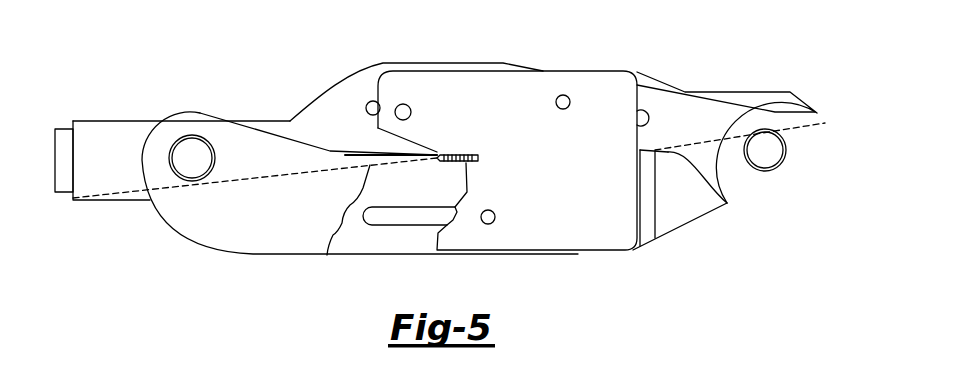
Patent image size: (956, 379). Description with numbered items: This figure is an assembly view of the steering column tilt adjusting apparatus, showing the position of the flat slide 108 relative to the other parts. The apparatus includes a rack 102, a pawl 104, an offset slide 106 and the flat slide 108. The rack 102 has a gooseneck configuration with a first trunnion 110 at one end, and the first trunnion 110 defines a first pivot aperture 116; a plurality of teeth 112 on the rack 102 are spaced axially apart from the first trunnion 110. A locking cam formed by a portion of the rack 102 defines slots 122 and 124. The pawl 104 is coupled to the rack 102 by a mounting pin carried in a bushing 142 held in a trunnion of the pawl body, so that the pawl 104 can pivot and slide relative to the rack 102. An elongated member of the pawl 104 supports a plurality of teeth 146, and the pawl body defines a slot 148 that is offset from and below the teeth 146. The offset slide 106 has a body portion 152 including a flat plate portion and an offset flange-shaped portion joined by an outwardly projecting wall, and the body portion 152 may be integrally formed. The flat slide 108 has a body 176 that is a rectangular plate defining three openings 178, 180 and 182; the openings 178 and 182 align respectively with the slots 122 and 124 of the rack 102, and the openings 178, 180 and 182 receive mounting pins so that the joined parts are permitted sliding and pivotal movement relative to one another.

The rack 102 is at (748, 92).
The pawl 104 is at (200, 238).
The offset slide 106 is at (672, 230).
The flat slide 108 is at (570, 155).
The first trunnion 110 is at (787, 213).
The teeth 112 is at (466, 157).
The first pivot aperture 116 is at (775, 150).
The slot 122 is at (368, 112).
The slot 124 is at (650, 123).
The bushing 142 is at (188, 157).
The teeth 146 is at (466, 163).
The slot 148 is at (385, 221).
The body portion 152 is at (697, 217).
The body 176 is at (610, 83).
The opening 178 is at (563, 102).
The opening 180 is at (403, 112).
The opening 182 is at (490, 224).